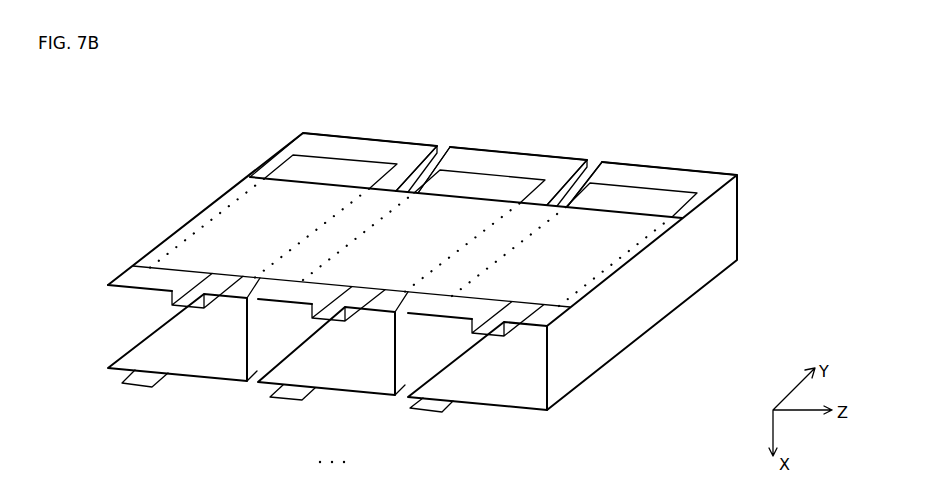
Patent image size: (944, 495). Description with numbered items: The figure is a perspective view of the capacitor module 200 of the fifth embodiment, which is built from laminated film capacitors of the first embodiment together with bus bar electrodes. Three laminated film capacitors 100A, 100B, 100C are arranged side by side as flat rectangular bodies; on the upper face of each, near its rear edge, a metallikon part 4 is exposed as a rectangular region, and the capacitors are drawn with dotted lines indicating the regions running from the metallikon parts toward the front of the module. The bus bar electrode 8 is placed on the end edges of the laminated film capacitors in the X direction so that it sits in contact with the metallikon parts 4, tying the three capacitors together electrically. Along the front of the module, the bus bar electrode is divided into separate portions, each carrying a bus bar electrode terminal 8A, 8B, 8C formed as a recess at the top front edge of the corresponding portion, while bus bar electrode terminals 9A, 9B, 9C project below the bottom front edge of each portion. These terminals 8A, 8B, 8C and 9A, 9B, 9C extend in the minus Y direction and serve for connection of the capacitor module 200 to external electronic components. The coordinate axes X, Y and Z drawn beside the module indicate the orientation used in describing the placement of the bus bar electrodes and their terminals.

The capacitor module 200 is at (702, 85).
The laminated film capacitor 100A is at (365, 138).
The laminated film capacitor 100B is at (488, 148).
The laminated film capacitor 100C is at (636, 164).
The metallikon part 4 is at (373, 170).
The bus bar electrode 8 is at (278, 195).
The bus bar electrode terminal 8A is at (207, 288).
The bus bar electrode terminal 8B is at (353, 303).
The bus bar electrode terminal 8C is at (510, 318).
The bus bar electrode terminal 9A is at (133, 385).
The bus bar electrode terminal 9B is at (283, 398).
The bus bar electrode terminal 9C is at (423, 410).